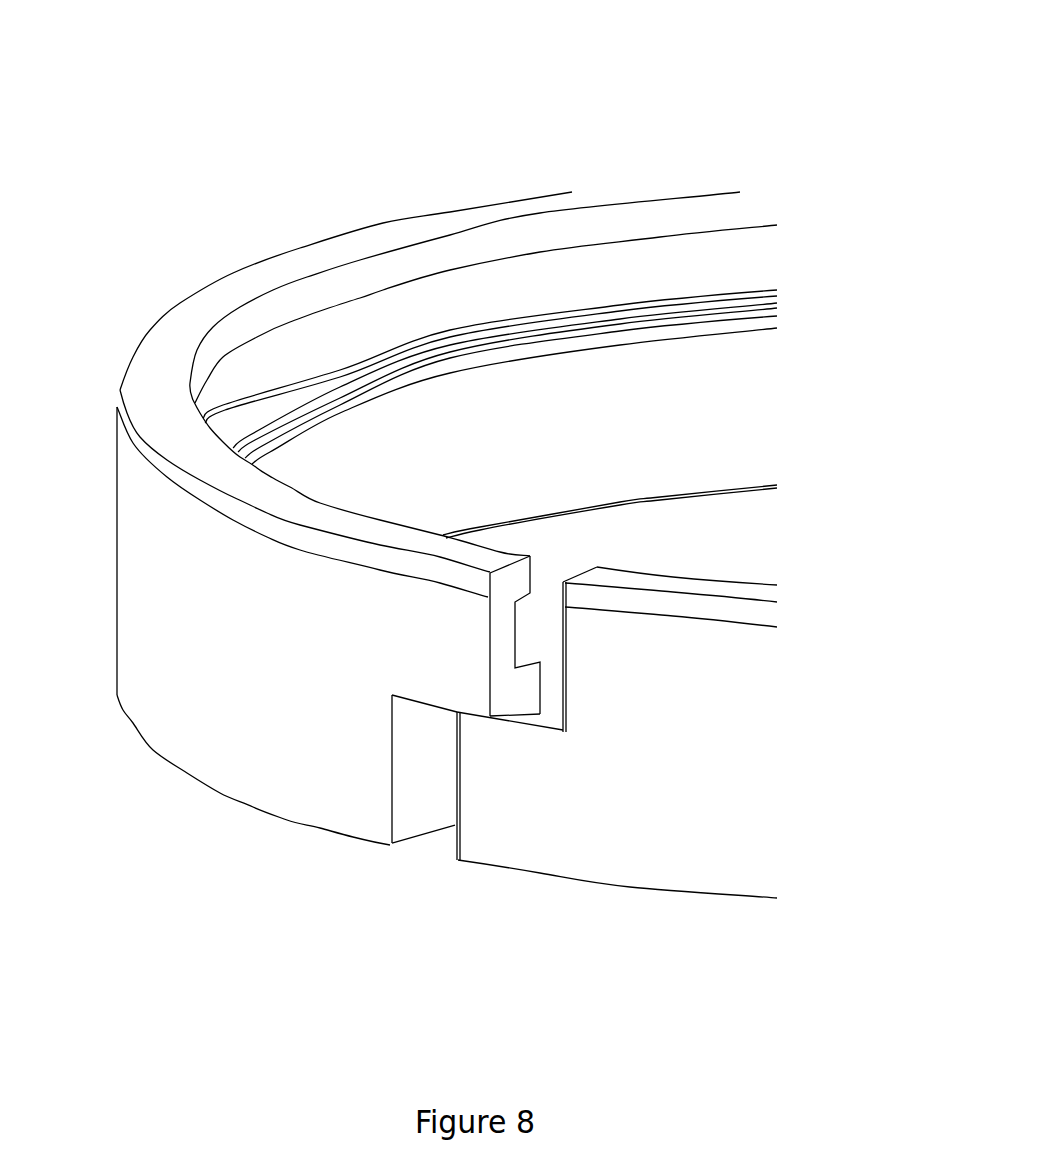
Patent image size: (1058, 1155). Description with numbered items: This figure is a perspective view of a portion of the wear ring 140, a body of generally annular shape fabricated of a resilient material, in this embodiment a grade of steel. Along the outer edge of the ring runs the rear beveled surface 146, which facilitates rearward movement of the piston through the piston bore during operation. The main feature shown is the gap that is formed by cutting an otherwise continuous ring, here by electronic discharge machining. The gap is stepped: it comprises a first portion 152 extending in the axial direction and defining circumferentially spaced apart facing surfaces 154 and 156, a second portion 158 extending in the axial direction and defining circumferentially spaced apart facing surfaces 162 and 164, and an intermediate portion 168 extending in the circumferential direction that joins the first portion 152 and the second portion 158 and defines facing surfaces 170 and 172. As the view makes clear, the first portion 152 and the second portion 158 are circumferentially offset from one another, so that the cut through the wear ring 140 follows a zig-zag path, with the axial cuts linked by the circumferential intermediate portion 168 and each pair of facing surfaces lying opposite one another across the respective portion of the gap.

The wear ring 140 is at (795, 55).
The rear beveled surface 146 is at (110, 404).
The first portion 152 is at (419, 888).
The facing surface 154 is at (424, 794).
The facing surface 156 is at (444, 845).
The second portion 158 is at (557, 538).
The facing surface 162 is at (508, 606).
The facing surface 164 is at (550, 621).
The intermediate portion 168 is at (426, 674).
The facing surface 170 is at (438, 720).
The facing surface 172 is at (548, 708).